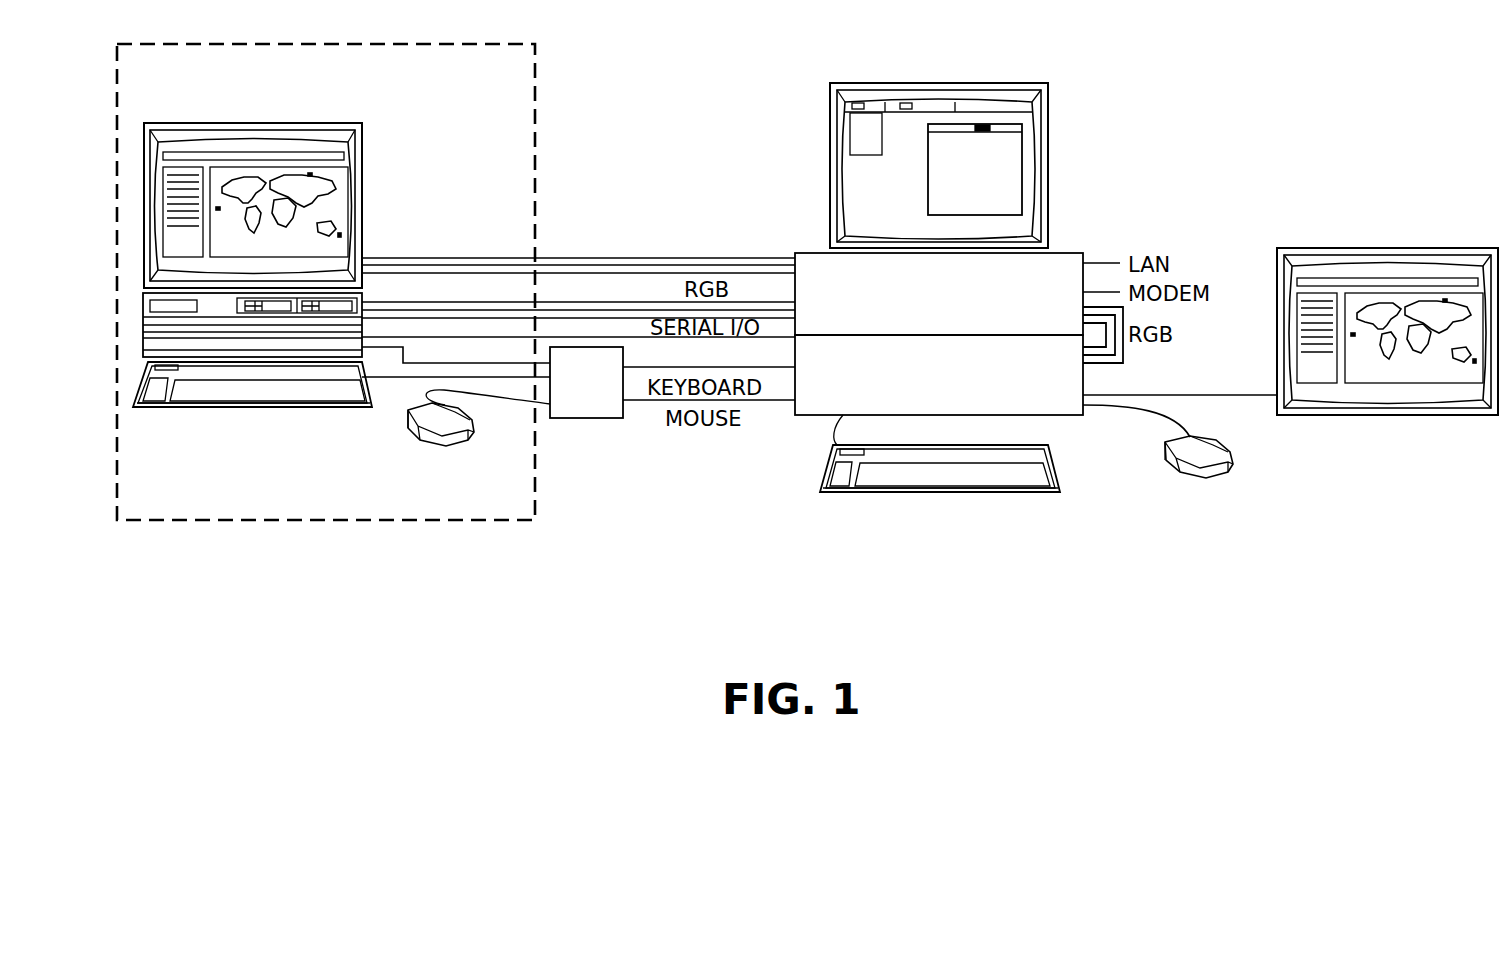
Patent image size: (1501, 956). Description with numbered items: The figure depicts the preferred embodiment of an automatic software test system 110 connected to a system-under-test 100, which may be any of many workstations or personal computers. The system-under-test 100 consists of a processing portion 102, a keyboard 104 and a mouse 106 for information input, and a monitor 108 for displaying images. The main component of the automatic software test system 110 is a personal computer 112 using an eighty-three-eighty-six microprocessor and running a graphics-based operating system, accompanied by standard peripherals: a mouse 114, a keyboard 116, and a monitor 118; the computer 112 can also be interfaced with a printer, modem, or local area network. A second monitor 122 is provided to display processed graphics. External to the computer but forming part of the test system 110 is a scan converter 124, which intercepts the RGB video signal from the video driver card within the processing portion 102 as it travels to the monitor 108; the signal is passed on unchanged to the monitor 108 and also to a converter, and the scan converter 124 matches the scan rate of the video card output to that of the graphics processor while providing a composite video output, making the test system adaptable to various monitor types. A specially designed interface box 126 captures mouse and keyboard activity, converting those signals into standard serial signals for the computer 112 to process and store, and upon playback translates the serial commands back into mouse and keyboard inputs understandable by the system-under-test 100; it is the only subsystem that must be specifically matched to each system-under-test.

The system-under-test 100 is at (503, 104).
The processing portion 102 is at (143, 330).
The keyboard 104 is at (290, 407).
The mouse 106 is at (468, 446).
The monitor 108 is at (362, 175).
The automatic software test system 110 is at (702, 545).
The personal computer 112 is at (1077, 352).
The mouse 114 is at (1232, 478).
The keyboard 116 is at (1040, 487).
The monitor 118 is at (1105, 88).
The second monitor 122 is at (1398, 243).
The scan converter 124 is at (1061, 284).
The interface box 126 is at (598, 418).